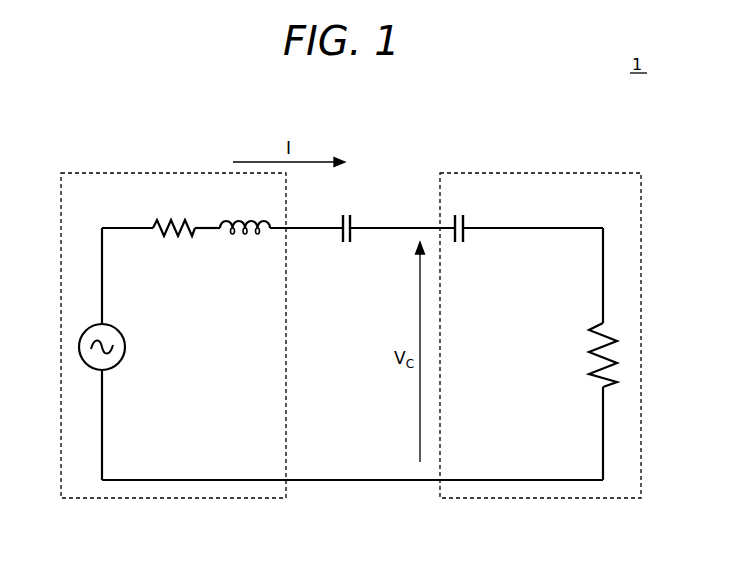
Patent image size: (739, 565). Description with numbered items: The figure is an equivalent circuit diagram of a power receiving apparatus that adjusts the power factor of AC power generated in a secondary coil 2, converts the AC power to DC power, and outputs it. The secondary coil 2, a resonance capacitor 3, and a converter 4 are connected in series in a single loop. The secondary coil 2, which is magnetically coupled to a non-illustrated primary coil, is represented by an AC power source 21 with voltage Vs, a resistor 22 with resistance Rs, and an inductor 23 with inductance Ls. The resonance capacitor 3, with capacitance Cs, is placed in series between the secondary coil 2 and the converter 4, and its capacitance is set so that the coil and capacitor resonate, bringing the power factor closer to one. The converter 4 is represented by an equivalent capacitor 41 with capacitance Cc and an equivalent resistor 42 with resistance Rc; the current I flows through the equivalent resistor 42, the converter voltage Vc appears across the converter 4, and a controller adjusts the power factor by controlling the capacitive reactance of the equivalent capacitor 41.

The secondary coil 2 is at (171, 173).
The AC power source 21 is at (79, 347).
The resistor 22 is at (176, 242).
The inductor 23 is at (242, 241).
The resonance capacitor 3 is at (347, 244).
The converter 4 is at (541, 173).
The equivalent capacitor 41 is at (460, 244).
The equivalent resistor 42 is at (616, 351).